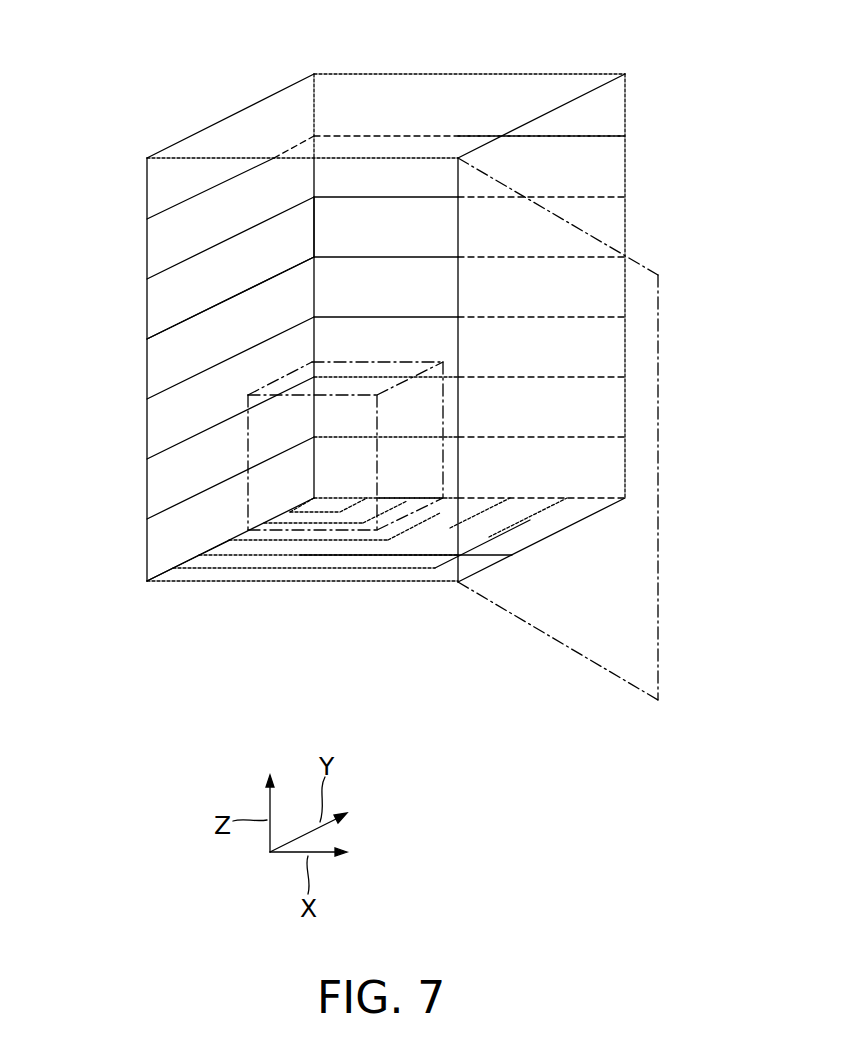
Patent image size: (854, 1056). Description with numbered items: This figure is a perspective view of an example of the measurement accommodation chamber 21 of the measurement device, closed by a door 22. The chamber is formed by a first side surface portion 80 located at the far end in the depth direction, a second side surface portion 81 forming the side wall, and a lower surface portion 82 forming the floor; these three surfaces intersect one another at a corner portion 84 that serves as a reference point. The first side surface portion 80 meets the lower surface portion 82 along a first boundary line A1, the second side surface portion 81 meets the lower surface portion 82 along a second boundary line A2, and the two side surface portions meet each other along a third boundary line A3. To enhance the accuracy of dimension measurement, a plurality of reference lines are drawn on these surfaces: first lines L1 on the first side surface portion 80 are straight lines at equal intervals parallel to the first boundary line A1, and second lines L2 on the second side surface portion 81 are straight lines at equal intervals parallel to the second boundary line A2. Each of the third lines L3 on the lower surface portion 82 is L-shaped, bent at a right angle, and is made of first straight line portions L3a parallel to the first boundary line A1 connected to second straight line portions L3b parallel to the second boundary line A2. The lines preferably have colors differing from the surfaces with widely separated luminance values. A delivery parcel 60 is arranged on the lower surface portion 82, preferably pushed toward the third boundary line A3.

The measurement accommodation chamber 21 is at (170, 182).
The door 22 is at (640, 267).
The delivery parcel 60 is at (248, 445).
The first side surface portion 80 is at (390, 219).
The second side surface portion 81 is at (163, 292).
The lower surface portion 82 is at (268, 558).
The corner portion 84 is at (313, 488).
The first boundary line A1 is at (397, 498).
The second boundary line A2 is at (193, 558).
The third boundary line A3 is at (314, 225).
The first lines L1 is at (347, 316).
The second lines L2 is at (217, 303).
The third lines L3 is at (343, 553).
The first straight line portions L3a is at (383, 556).
The second straight line portions L3b is at (510, 555).